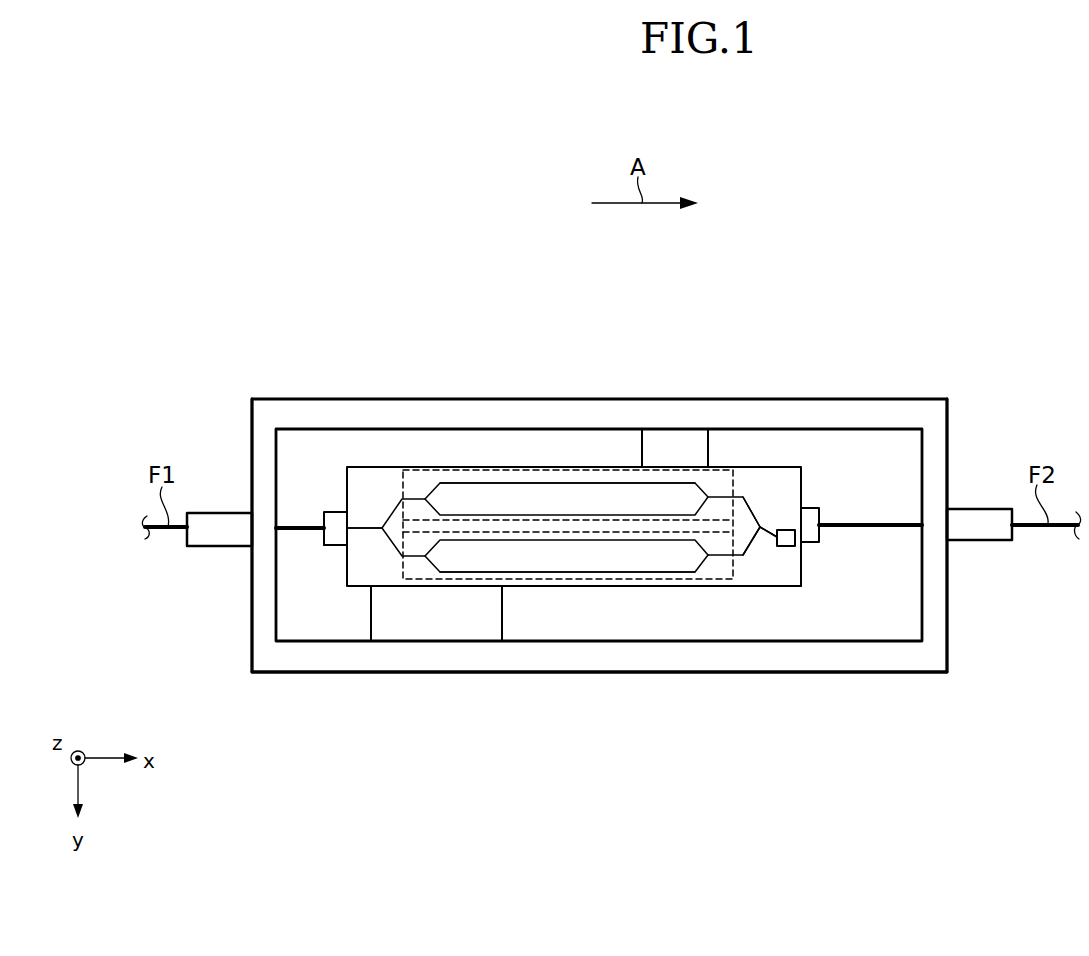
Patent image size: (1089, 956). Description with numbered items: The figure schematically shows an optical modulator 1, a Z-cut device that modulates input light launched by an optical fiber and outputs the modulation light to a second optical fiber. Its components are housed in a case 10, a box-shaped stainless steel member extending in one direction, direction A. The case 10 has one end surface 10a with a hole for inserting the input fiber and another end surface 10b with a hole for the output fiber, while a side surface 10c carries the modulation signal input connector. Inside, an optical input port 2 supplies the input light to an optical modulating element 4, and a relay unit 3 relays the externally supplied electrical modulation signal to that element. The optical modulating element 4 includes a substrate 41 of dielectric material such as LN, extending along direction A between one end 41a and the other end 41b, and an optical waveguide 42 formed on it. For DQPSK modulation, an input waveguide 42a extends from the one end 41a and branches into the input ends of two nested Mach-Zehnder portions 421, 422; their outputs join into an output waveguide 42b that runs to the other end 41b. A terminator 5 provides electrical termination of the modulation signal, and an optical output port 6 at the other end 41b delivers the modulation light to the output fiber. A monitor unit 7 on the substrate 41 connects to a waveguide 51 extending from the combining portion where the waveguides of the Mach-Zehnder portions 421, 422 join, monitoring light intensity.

The optical modulator 1 is at (950, 285).
The optical input port 2 is at (330, 520).
The relay unit 3 is at (480, 630).
The optical modulating element 4 is at (358, 478).
The terminator 5 is at (678, 448).
The optical output port 6 is at (817, 513).
The monitor unit 7 is at (787, 547).
The case 10 is at (897, 407).
The one end surface 10a is at (250, 618).
The other end surface 10b is at (948, 437).
The side surface 10c is at (673, 672).
The substrate 41 is at (358, 560).
The one end 41a is at (343, 575).
The other end 41b is at (803, 585).
The optical waveguide 42 is at (388, 478).
The Mach-Zehnder portion 421 is at (615, 467).
The Mach-Zehnder portion 422 is at (627, 580).
The input waveguide 42a is at (372, 530).
The output waveguide 42b is at (768, 527).
The waveguide 51 is at (770, 530).